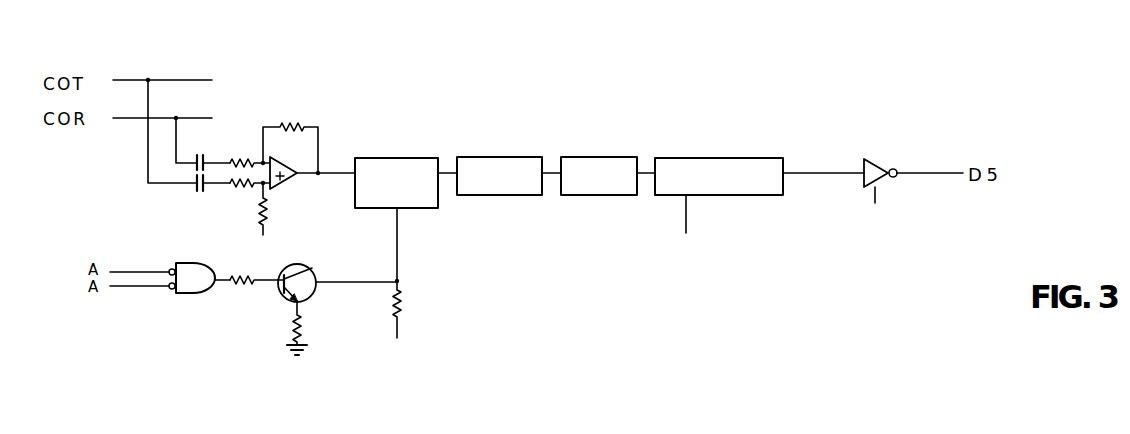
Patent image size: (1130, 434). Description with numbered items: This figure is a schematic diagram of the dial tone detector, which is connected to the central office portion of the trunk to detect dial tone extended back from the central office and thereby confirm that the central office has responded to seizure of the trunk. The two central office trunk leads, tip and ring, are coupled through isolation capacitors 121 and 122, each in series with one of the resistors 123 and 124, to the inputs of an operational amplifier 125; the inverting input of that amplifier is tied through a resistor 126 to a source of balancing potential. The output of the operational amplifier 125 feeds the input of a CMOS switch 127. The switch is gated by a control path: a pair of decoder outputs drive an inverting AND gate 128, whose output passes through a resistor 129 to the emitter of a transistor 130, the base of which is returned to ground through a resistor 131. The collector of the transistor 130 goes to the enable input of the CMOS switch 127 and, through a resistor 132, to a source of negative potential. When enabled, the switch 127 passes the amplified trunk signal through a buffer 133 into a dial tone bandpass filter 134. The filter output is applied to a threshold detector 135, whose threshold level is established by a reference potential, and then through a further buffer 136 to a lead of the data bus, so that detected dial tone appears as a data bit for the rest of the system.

The isolation capacitor 121 is at (198, 155).
The isolation capacitor 122 is at (196, 191).
The resistor 123 is at (238, 158).
The resistor 124 is at (233, 191).
The operational amplifier 125 is at (291, 183).
The resistor 126 is at (268, 210).
The CMOS switch 127 is at (433, 158).
The inverting AND gate 128 is at (195, 262).
The resistor 129 is at (237, 274).
The transistor 130 is at (314, 268).
The resistor 131 is at (300, 320).
The resistor 132 is at (401, 303).
The buffer 133 is at (527, 157).
The dial tone bandpass filter 134 is at (613, 157).
The threshold detector 135 is at (760, 158).
The buffer 136 is at (883, 162).